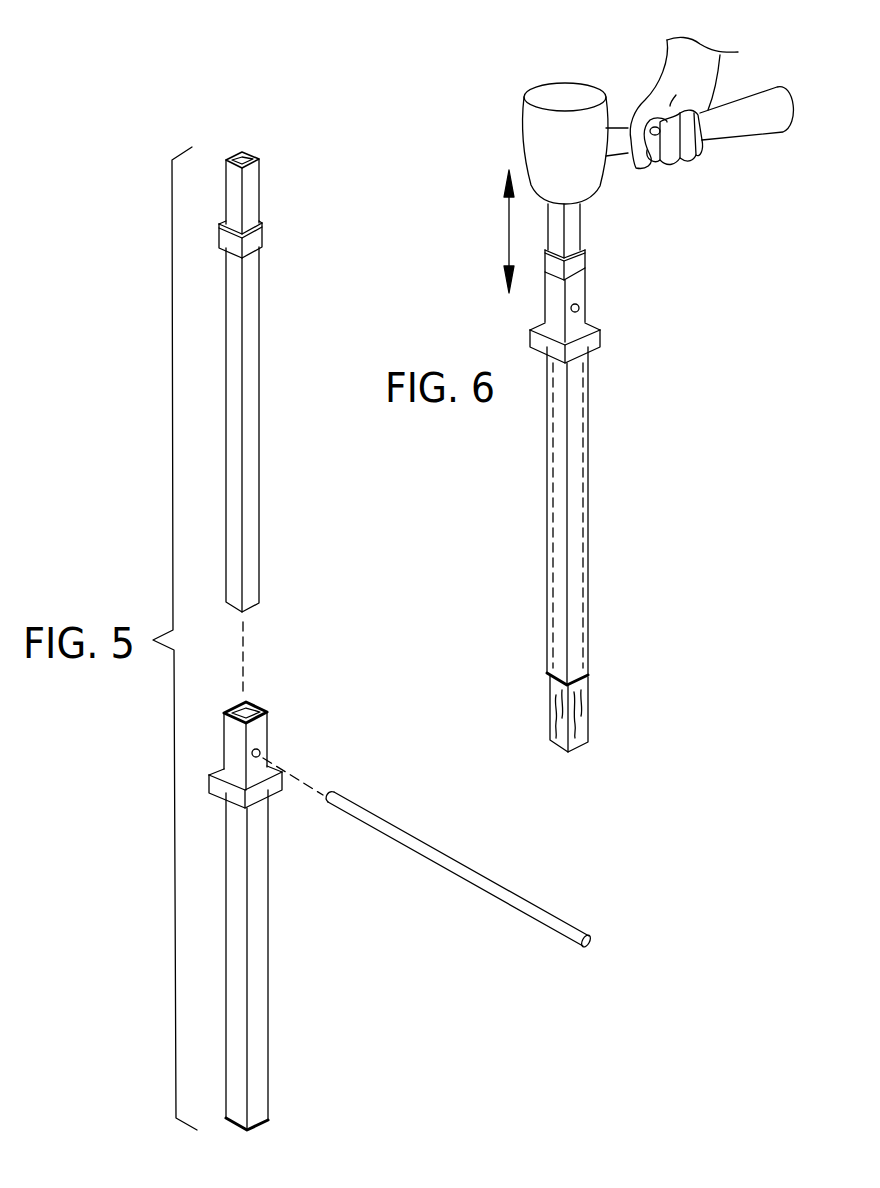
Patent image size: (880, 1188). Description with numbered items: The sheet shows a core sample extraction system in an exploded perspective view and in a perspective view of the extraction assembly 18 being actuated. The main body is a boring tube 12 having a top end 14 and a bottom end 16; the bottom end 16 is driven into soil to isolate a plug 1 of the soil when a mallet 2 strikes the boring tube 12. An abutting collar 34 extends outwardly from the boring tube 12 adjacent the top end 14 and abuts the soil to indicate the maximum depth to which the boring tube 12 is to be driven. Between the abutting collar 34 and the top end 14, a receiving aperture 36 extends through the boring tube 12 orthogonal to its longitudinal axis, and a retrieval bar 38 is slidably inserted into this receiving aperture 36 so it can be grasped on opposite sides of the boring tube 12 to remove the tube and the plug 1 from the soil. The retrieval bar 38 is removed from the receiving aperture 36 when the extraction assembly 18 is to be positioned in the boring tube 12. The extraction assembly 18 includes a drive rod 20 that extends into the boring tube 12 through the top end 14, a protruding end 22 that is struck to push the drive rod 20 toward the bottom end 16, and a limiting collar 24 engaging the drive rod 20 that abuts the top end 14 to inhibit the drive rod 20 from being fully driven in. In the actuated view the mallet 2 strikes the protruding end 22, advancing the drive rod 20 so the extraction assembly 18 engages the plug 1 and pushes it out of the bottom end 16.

In FIG. 6, the plug 1 is at (589, 720).
In FIG. 6, the mallet 2 is at (541, 84).
In FIG. 5, the boring tube 12 is at (269, 940).
In FIG. 6, the boring tube 12 is at (589, 447).
In FIG. 5, the top end 14 is at (268, 718).
In FIG. 6, the top end 14 is at (576, 273).
In FIG. 5, the bottom end 16 is at (262, 1128).
In FIG. 6, the bottom end 16 is at (584, 682).
In FIG. 5, the extraction assembly 18 is at (260, 195).
In FIG. 6, the extraction assembly 18 is at (581, 222).
In FIG. 5, the drive rod 20 is at (260, 362).
In FIG. 6, the drive rod 20 is at (584, 552).
In FIG. 5, the protruding end 22 is at (239, 153).
In FIG. 5, the limiting collar 24 is at (263, 243).
In FIG. 6, the limiting collar 24 is at (579, 262).
In FIG. 5, the abutting collar 34 is at (272, 786).
In FIG. 6, the abutting collar 34 is at (593, 342).
In FIG. 5, the receiving aperture 36 is at (261, 752).
In FIG. 6, the receiving aperture 36 is at (580, 307).
In FIG. 5, the retrieval bar 38 is at (421, 840).